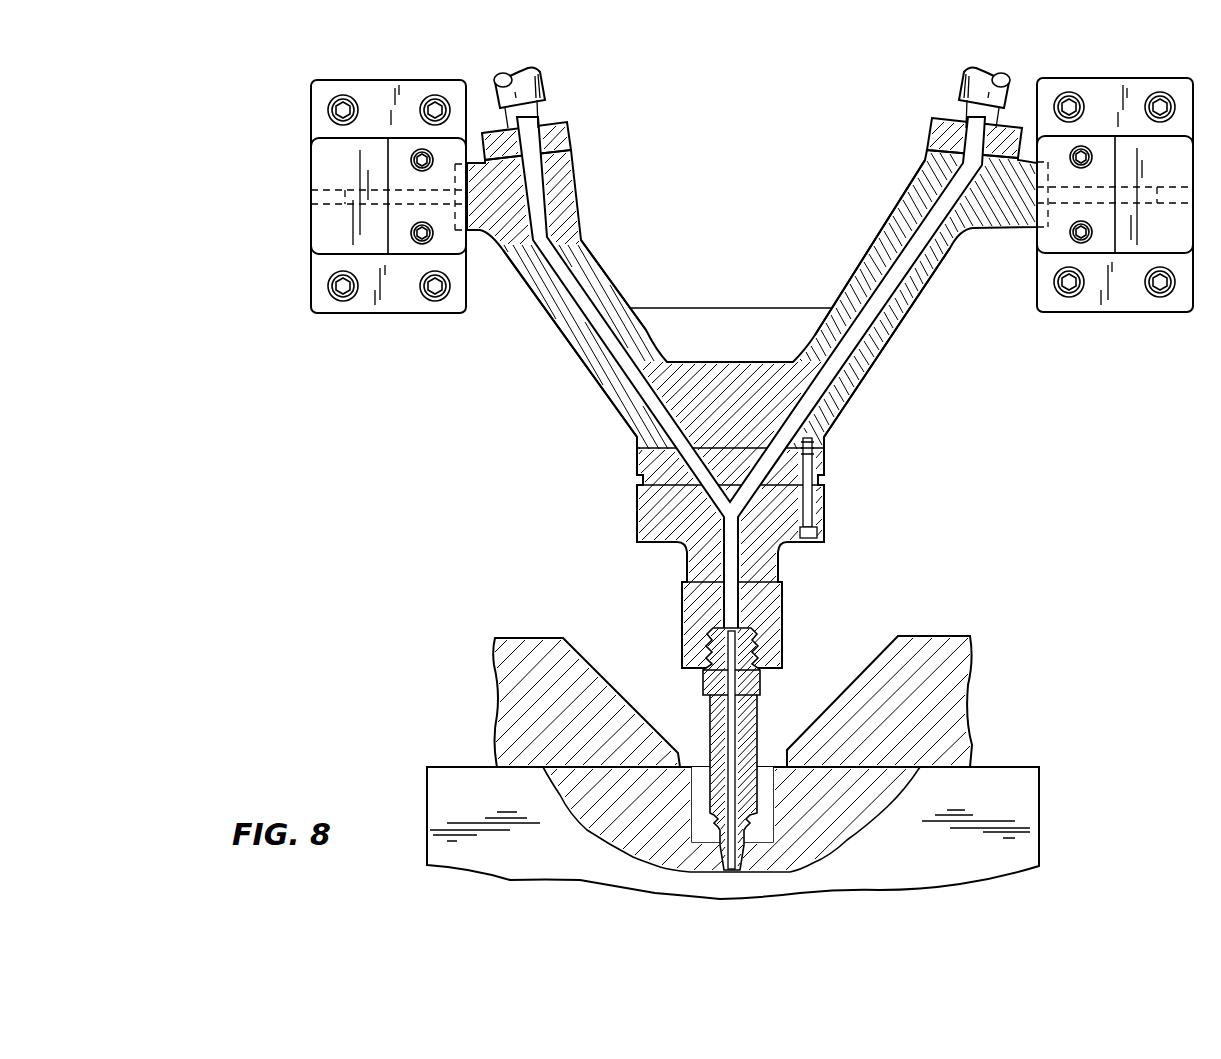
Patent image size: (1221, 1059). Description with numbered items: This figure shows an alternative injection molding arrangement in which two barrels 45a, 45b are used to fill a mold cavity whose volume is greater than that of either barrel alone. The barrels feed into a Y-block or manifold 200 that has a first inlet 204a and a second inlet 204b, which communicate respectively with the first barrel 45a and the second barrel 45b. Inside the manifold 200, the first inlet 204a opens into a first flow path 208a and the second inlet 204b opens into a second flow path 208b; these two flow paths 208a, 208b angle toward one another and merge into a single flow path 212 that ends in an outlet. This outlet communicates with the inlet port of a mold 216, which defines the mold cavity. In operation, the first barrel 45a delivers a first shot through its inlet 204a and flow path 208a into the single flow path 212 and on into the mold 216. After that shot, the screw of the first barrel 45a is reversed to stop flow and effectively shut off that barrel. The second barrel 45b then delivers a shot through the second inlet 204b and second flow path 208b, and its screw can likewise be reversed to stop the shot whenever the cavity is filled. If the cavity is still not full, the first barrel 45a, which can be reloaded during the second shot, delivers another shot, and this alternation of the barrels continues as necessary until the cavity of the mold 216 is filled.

The Y-block or manifold 200 is at (535, 440).
The first barrel 45a is at (532, 70).
The second barrel 45b is at (960, 85).
The first inlet 204a is at (527, 147).
The second inlet 204b is at (977, 137).
The first flow path 208a is at (577, 290).
The second flow path 208b is at (905, 262).
The single flow path 212 is at (730, 535).
The mold 216 is at (1000, 780).